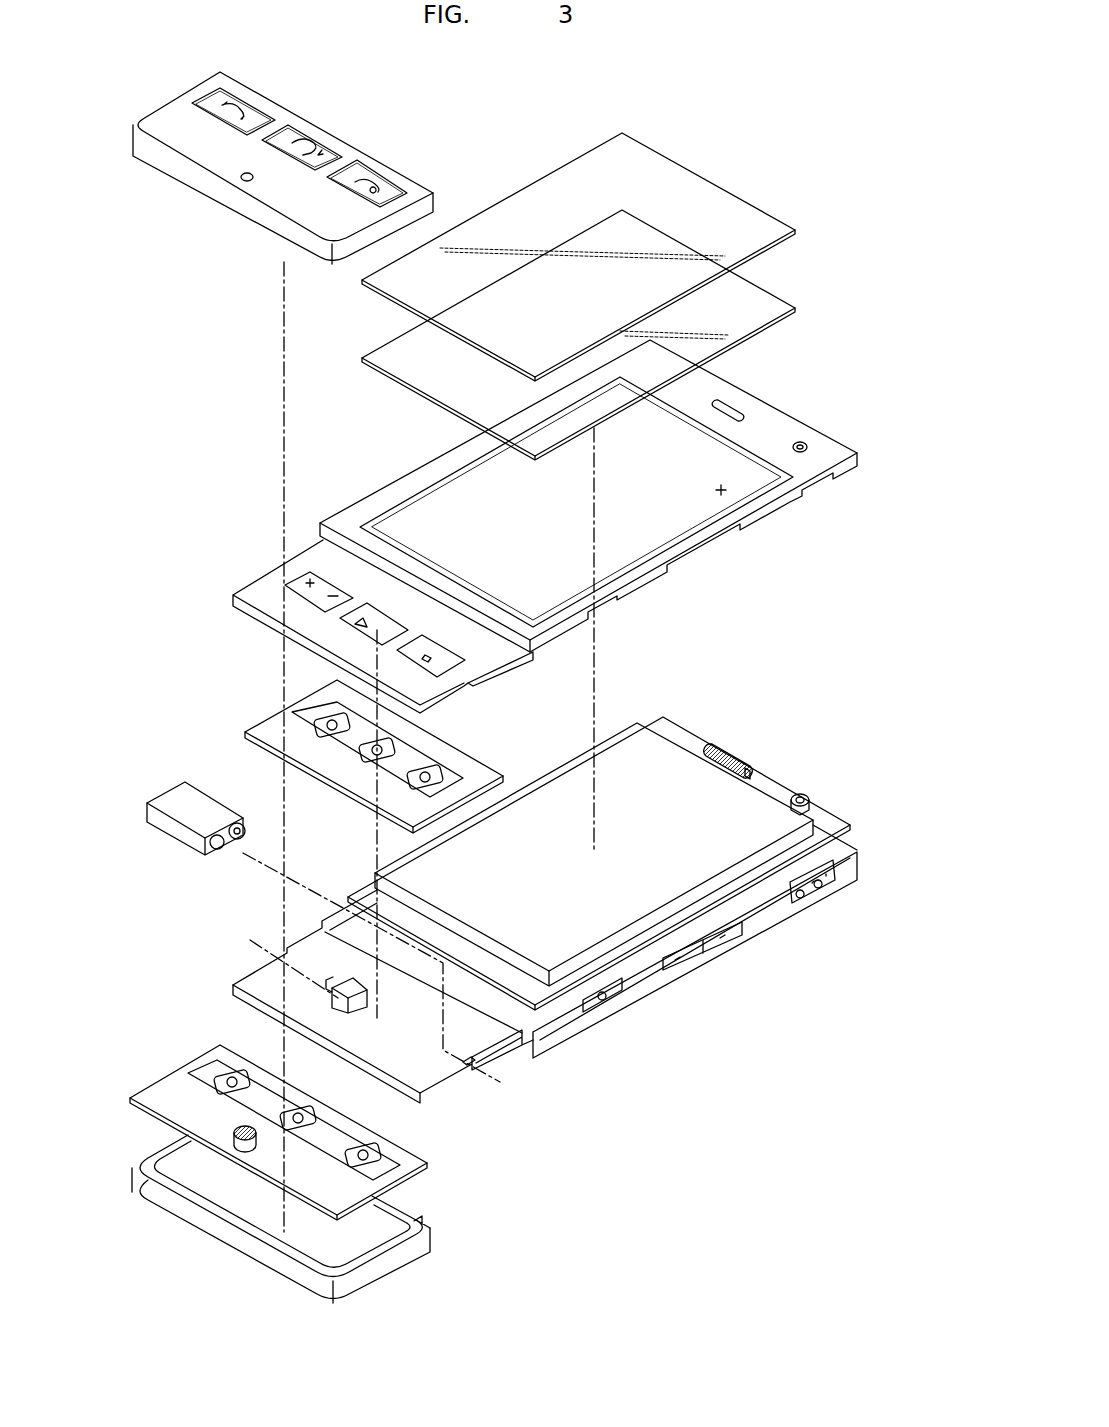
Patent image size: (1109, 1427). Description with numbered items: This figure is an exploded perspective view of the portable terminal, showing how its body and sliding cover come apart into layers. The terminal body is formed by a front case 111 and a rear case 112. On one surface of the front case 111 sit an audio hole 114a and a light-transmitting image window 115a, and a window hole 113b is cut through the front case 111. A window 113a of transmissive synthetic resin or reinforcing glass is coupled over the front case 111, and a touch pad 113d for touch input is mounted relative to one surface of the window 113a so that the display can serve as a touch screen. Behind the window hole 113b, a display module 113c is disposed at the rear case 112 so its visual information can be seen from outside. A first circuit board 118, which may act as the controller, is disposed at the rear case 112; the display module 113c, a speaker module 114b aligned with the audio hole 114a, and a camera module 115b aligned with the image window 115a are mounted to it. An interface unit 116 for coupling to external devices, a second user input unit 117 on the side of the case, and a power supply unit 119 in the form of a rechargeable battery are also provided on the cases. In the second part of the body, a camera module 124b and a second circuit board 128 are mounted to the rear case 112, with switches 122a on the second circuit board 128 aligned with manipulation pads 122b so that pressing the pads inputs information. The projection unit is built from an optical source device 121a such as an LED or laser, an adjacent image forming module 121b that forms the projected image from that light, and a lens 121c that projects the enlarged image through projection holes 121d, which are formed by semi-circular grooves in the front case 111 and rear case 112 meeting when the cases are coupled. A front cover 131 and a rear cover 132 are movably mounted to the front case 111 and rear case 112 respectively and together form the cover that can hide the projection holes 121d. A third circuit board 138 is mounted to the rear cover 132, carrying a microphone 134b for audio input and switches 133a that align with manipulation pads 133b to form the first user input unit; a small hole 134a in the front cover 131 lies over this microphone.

The front case 111 is at (853, 472).
The rear case 112 is at (853, 873).
The window 113a is at (704, 188).
The window hole 113b is at (726, 495).
The display module 113c is at (653, 753).
The touch pad 113d is at (763, 298).
The audio hole 114a is at (736, 409).
The speaker module 114b is at (737, 758).
The image window 115a is at (806, 444).
The camera module 115b is at (803, 796).
The interface unit 116 is at (817, 897).
The second user input unit 117 is at (717, 953).
The first circuit board 118 is at (830, 818).
The power supply unit 119 is at (645, 1000).
The optical source device 121a is at (217, 850).
The image forming module 121b is at (173, 798).
The lens 121c is at (236, 826).
The projection holes 121d is at (468, 1067).
The switches 122a is at (313, 717).
The manipulation pads 122b is at (307, 583).
The camera module 124b is at (332, 997).
The second circuit board 128 is at (268, 727).
The front cover 131 is at (178, 172).
The rear cover 132 is at (393, 1265).
The switches 133a is at (198, 1060).
The manipulation pads 133b is at (323, 148).
The microphone hole 134a is at (244, 180).
The microphone 134b is at (233, 1143).
The third circuit board 138 is at (157, 1092).